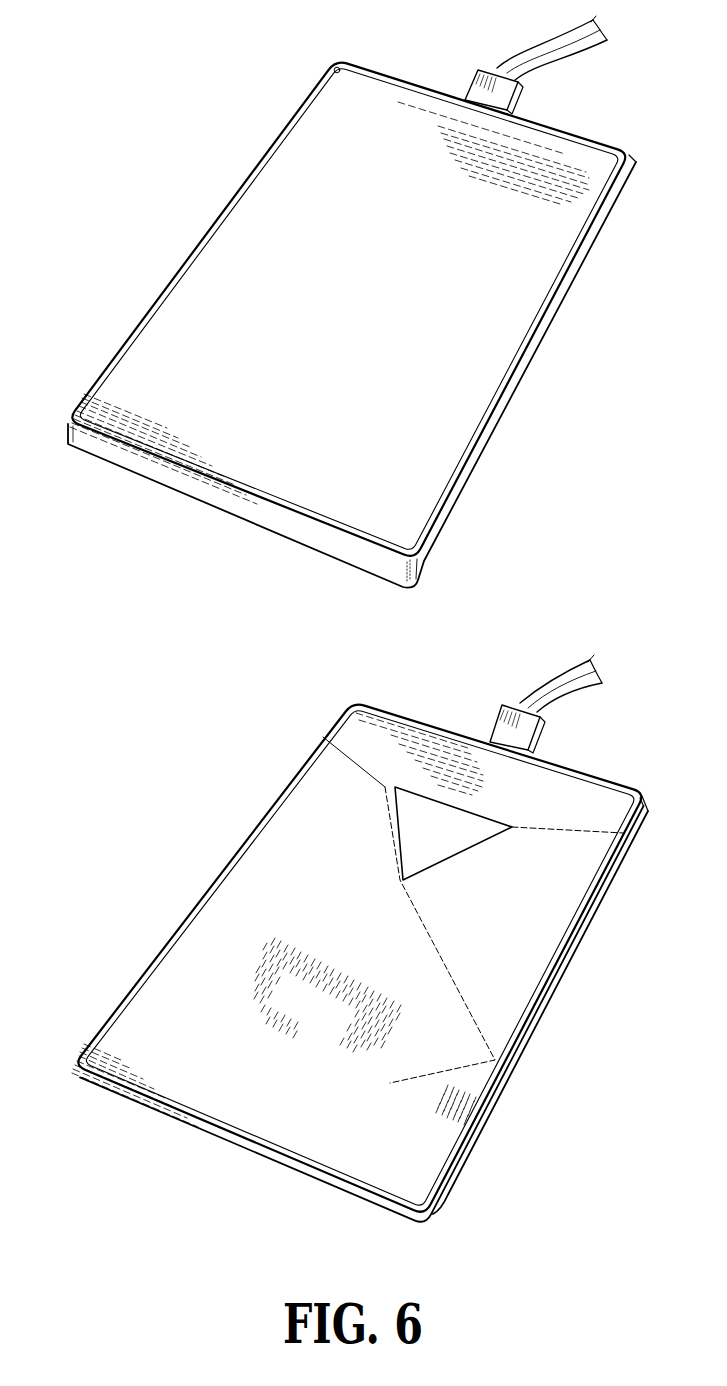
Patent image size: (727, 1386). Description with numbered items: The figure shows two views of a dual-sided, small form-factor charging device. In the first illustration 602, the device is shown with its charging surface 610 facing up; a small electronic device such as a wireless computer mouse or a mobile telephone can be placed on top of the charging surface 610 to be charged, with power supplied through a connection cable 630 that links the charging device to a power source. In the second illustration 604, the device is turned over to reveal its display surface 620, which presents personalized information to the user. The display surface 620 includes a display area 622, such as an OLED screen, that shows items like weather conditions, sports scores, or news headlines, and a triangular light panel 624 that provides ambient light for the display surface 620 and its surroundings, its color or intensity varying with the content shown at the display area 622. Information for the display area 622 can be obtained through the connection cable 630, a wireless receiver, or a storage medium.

The illustration of charging device showing charging surface 602 is at (181, 131).
The illustration of charging device showing display surface 604 is at (201, 776).
The charging surface 610 is at (475, 326).
The display surface 620 is at (280, 883).
The display area 622 is at (307, 1012).
The light panel 624 is at (425, 842).
The connection cable 630 is at (532, 53).